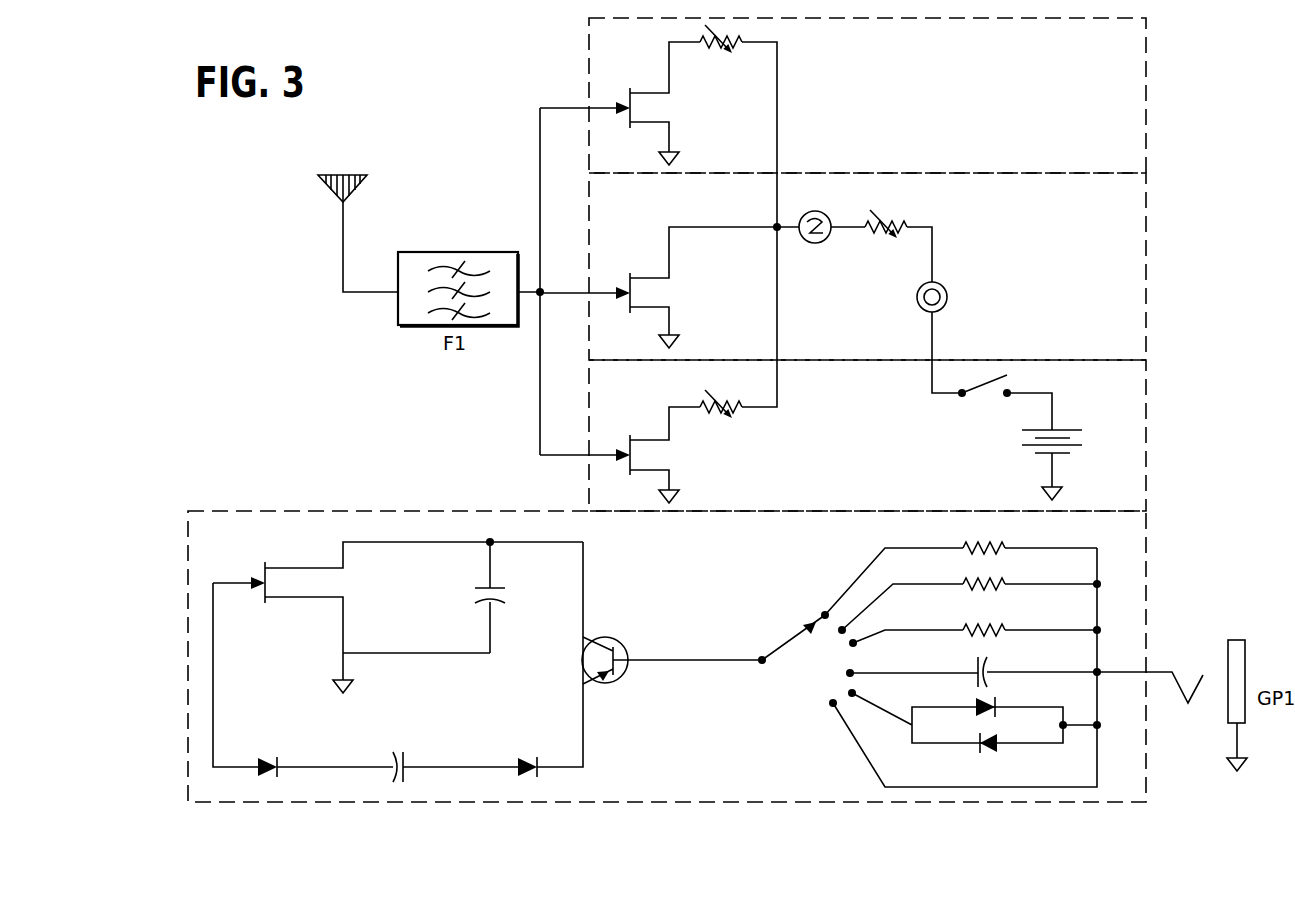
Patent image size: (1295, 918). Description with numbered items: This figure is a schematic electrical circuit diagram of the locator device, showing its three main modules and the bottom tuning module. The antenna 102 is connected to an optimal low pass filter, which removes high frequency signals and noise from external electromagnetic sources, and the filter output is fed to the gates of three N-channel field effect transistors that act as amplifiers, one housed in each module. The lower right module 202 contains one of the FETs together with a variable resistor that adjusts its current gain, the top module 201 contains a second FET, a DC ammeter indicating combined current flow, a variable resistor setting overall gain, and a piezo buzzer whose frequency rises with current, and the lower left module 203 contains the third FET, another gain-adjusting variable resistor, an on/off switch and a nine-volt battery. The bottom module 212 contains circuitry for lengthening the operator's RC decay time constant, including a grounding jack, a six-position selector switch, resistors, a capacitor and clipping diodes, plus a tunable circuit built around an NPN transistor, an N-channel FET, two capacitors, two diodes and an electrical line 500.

The antenna 102 is at (349, 175).
The lower right module 202 is at (1148, 136).
The top module 201 is at (1148, 263).
The lower left module 203 is at (1148, 470).
The bottom module 212 is at (741, 638).
The electrical line 500 is at (378, 542).